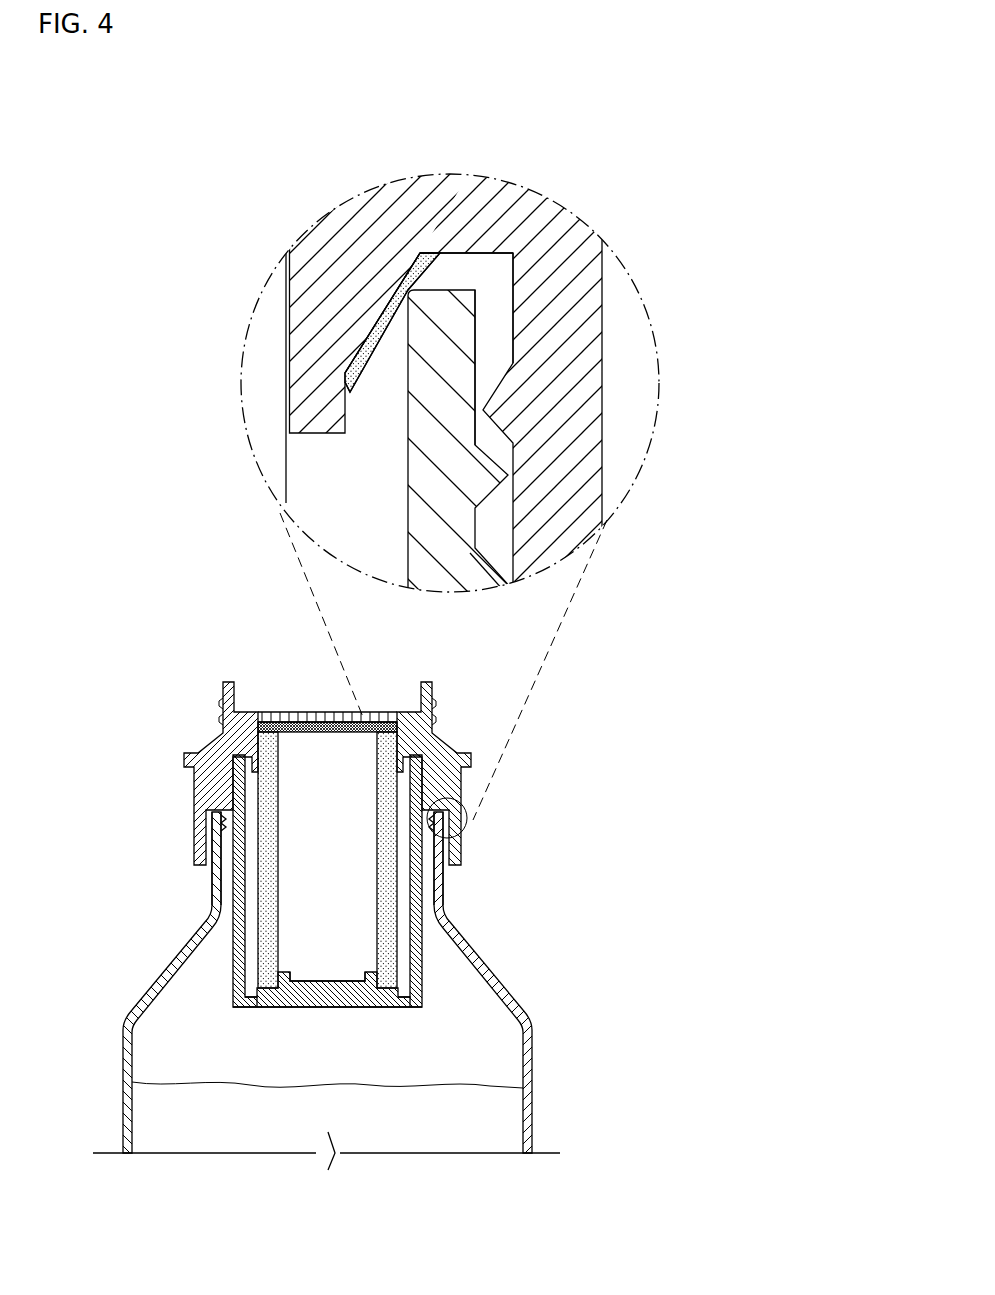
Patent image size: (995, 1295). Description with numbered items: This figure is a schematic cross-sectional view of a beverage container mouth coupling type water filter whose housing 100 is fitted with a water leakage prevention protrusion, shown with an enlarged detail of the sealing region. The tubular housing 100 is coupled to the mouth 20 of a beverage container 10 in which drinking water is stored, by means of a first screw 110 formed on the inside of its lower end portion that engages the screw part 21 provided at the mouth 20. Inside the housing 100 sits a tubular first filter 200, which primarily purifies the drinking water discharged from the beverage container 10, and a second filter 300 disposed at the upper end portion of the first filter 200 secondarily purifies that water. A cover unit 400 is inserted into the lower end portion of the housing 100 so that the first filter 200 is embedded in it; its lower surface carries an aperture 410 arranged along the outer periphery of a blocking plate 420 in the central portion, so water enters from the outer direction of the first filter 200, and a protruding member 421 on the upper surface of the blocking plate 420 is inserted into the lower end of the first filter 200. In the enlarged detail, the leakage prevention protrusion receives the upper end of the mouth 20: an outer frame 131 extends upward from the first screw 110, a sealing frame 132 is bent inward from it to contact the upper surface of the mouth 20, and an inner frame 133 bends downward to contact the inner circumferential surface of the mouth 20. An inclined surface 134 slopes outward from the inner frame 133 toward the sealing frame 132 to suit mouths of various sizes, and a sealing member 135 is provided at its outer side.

The beverage container 10 is at (530, 1060).
The mouth 20 is at (215, 872).
The screw part 21 is at (483, 378).
The housing 100 is at (203, 778).
The first screw 110 is at (497, 542).
The outer frame 131 is at (592, 295).
The sealing frame 132 is at (477, 212).
The inner frame 133 is at (303, 378).
The inclined surface 134 is at (392, 322).
The sealing member 135 is at (393, 330).
The first filter 200 is at (263, 918).
The second filter 300 is at (301, 712).
The cover unit 400 is at (235, 977).
The aperture 410 is at (250, 1000).
The blocking plate 420 is at (338, 1002).
The protruding member 421 is at (283, 970).